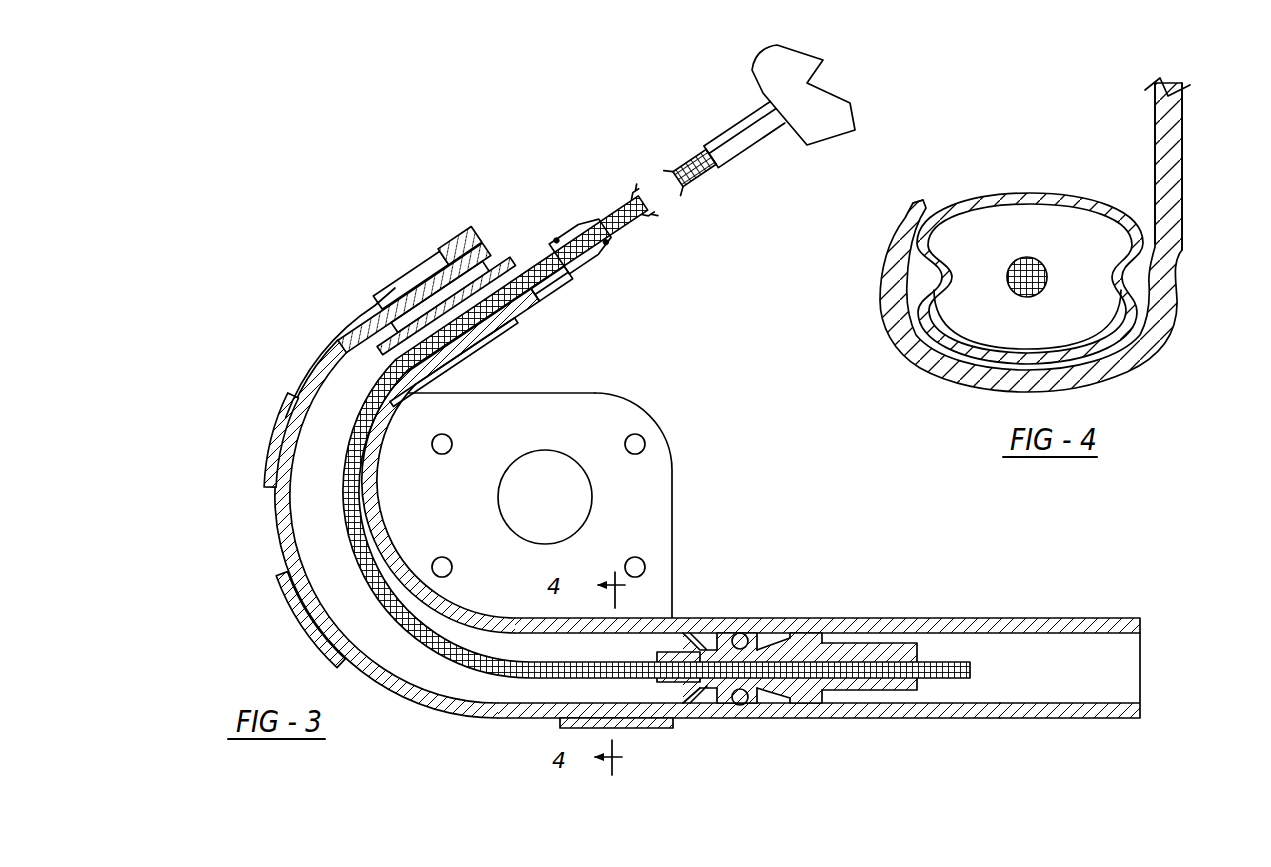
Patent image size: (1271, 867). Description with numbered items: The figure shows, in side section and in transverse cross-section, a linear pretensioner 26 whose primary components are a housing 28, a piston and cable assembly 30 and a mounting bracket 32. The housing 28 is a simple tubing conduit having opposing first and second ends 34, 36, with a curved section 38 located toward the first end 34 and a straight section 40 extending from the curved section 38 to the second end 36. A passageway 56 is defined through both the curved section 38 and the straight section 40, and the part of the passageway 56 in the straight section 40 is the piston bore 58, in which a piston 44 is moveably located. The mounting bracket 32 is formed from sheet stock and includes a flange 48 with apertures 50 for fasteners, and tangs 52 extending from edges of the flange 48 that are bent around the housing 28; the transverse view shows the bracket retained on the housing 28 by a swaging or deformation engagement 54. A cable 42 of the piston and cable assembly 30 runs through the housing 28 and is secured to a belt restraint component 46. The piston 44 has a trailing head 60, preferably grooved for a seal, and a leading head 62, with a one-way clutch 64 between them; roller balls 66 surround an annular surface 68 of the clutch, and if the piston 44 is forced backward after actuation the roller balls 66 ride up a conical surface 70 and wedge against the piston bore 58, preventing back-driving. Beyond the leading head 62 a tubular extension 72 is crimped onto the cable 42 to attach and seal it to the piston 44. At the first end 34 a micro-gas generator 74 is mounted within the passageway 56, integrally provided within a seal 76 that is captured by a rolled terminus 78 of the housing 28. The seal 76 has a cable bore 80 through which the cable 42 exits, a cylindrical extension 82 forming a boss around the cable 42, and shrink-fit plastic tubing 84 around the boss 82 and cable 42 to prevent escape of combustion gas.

In FIG. 3, the linear pretensioner 26 is at (745, 345).
In FIG. 4, the linear pretensioner 26 is at (1022, 192).
In FIG. 3, the housing 28 is at (789, 630).
In FIG. 3, the piston and cable assembly 30 is at (580, 175).
In FIG. 3, the mounting bracket 32 is at (605, 479).
In FIG. 4, the mounting bracket 32 is at (1200, 152).
In FIG. 3, the first end 34 is at (393, 302).
In FIG. 3, the second end 36 is at (1070, 620).
In FIG. 3, the curved section 38 is at (283, 553).
In FIG. 3, the straight section 40 is at (897, 718).
In FIG. 3, the cable 42 is at (690, 157).
In FIG. 4, the cable 42 is at (1030, 262).
In FIG. 3, the piston 44 is at (660, 686).
In FIG. 3, the belt restraint component 46 is at (768, 82).
In FIG. 3, the flange 48 is at (665, 470).
In FIG. 4, the flange 48 is at (1165, 118).
In FIG. 3, the apertures 50 is at (635, 440).
In FIG. 3, the tangs 52 is at (272, 420).
In FIG. 4, the tangs 52 is at (978, 385).
In FIG. 4, the deformation engagement 54 is at (890, 278).
In FIG. 3, the passageway 56 is at (330, 377).
In FIG. 4, the passageway 56 is at (962, 235).
In FIG. 3, the piston bore 58 is at (1070, 702).
In FIG. 3, the trailing head 60 is at (698, 700).
In FIG. 3, the leading head 62 is at (815, 695).
In FIG. 3, the one-way clutch 64 is at (757, 697).
In FIG. 3, the roller balls 66 is at (740, 636).
In FIG. 3, the annular surface 68 is at (757, 650).
In FIG. 3, the conical surface 70 is at (770, 640).
In FIG. 3, the tubular extension 72 is at (885, 650).
In FIG. 3, the micro-gas generator 74 is at (422, 315).
In FIG. 3, the seal 76 is at (455, 258).
In FIG. 3, the rolled terminus 78 is at (500, 245).
In FIG. 3, the cable bore 80 is at (478, 322).
In FIG. 3, the cylindrical extension 82 is at (547, 280).
In FIG. 3, the shrink-fit plastic tubing 84 is at (588, 224).